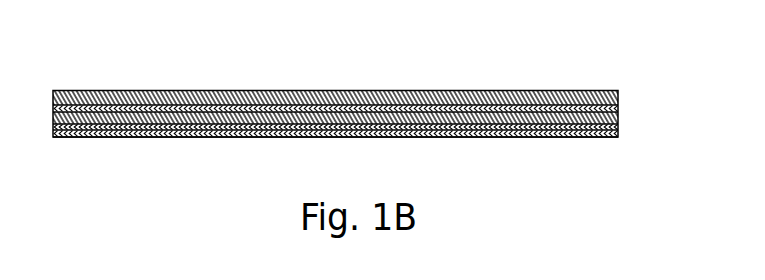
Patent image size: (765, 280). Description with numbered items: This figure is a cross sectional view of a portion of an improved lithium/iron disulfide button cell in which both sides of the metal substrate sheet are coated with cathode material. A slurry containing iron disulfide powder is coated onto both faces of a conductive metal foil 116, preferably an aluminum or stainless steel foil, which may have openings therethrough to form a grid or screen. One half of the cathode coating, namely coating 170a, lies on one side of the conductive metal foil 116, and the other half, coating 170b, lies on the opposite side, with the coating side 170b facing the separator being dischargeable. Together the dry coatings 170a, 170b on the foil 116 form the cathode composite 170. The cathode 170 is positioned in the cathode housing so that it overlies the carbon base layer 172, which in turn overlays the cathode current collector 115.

The cathode current collector 115 is at (513, 138).
The conductive metal foil 116 is at (141, 103).
The cathode composite 170 is at (172, 93).
The cathode coating 170a is at (518, 92).
The cathode coating 170b is at (619, 117).
The carbon base layer 172 is at (619, 124).